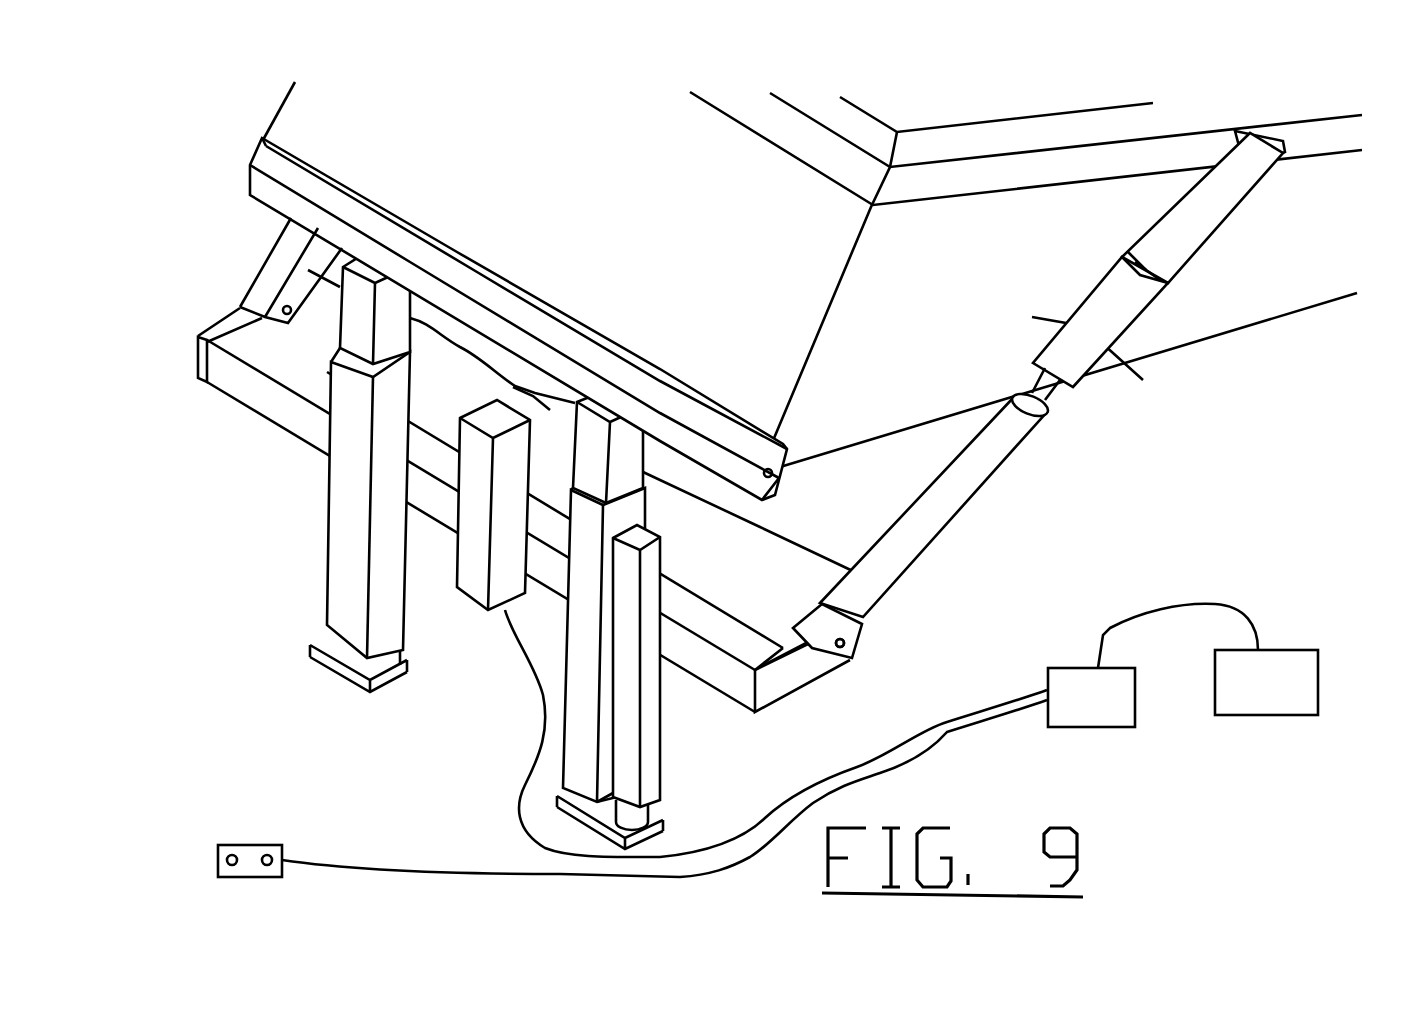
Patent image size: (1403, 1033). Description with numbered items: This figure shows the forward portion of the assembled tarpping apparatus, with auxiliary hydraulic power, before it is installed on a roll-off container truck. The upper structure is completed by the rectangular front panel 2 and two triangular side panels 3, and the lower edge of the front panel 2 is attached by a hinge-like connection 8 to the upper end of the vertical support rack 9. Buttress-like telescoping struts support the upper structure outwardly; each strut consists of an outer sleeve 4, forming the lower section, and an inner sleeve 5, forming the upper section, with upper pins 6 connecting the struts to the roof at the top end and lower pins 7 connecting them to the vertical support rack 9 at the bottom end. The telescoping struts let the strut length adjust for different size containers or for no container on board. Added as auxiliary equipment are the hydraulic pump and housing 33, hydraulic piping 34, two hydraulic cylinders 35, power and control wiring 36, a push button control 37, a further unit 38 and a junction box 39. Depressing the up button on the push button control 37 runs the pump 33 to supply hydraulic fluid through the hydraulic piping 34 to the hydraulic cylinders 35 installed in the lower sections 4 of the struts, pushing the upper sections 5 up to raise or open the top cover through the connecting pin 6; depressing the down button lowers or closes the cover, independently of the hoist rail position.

The front panel 2 is at (340, 103).
The side panels 3 is at (945, 395).
The outer sleeve 4 is at (274, 276).
The inner sleeve 5 is at (1187, 273).
The upper pins 6 is at (1233, 132).
The lower pins 7 is at (852, 655).
The hinge-like connection 8 is at (245, 168).
The vertical support rack 9 is at (290, 440).
The hydraulic pump and housing 33 is at (452, 598).
The hydraulic piping 34 is at (502, 384).
The hydraulic cylinders 35 is at (1020, 455).
The power and control wiring 36 is at (545, 736).
The push button control 37 is at (270, 842).
The power source 38 is at (1278, 672).
The junction box 39 is at (1078, 690).